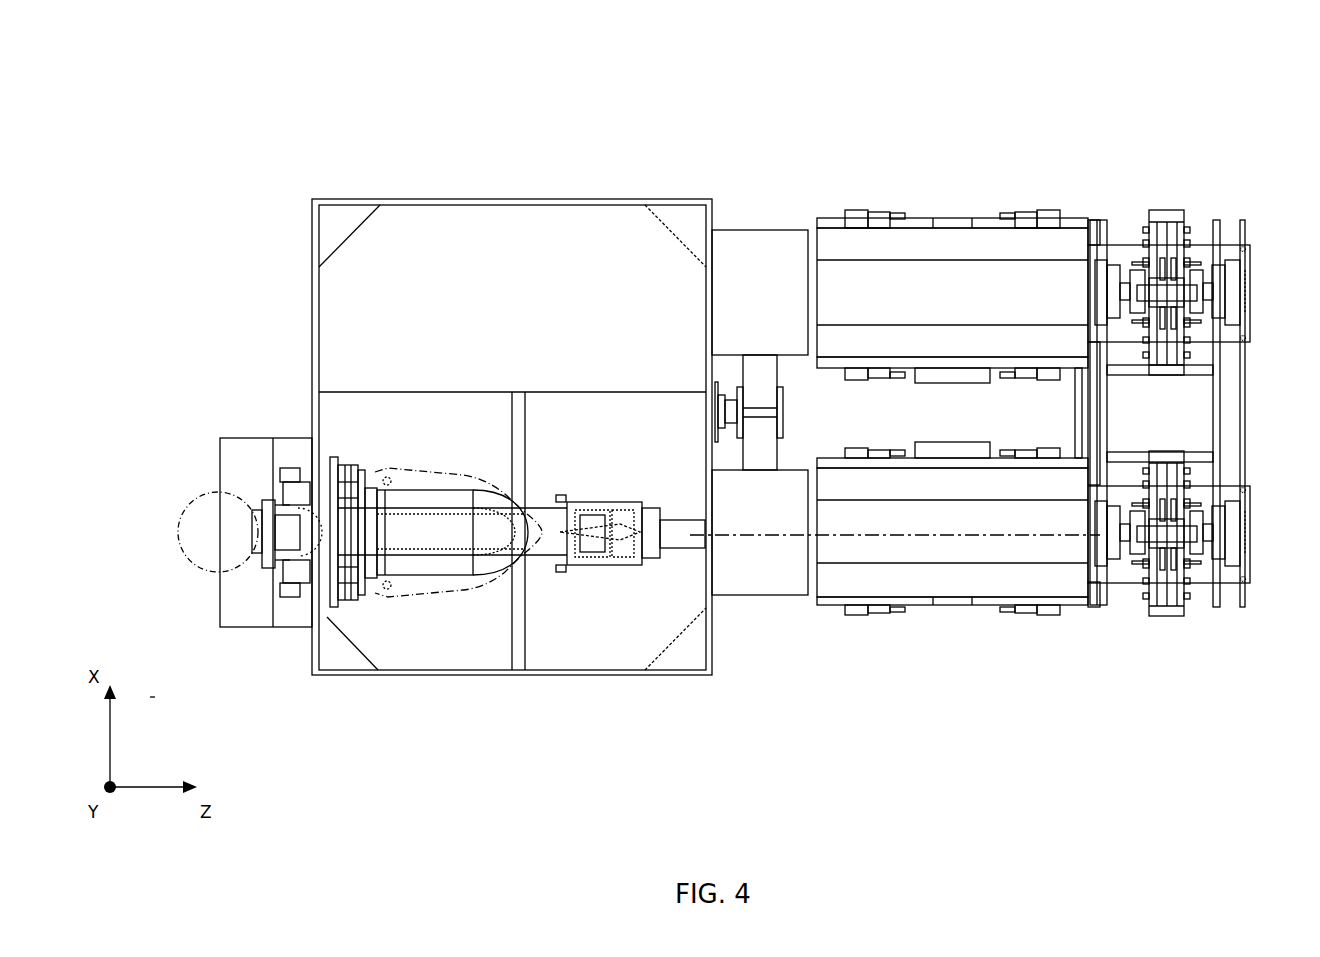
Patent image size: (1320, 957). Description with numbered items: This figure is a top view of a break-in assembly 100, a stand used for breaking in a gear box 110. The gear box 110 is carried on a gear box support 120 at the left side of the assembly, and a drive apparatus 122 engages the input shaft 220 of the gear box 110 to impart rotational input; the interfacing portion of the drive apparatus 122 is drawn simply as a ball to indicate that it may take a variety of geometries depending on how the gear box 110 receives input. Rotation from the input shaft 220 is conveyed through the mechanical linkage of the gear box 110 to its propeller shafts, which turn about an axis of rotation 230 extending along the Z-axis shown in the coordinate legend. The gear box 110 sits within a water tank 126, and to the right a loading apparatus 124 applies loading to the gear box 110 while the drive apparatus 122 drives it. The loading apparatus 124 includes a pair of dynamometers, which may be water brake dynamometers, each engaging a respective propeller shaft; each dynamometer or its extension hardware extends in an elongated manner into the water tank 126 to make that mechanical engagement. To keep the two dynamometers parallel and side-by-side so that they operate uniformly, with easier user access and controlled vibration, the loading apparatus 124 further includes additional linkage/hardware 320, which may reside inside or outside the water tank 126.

The break-in assembly 100 is at (218, 68).
The gear box 110 is at (472, 603).
The gear box support 120 is at (290, 444).
The drive apparatus 122 is at (200, 508).
The loading apparatus 124 is at (1086, 163).
The water tank 126 is at (565, 675).
The input shaft 220 is at (252, 584).
The axis of rotation 230 is at (760, 537).
The linkage/hardware 320 is at (698, 388).